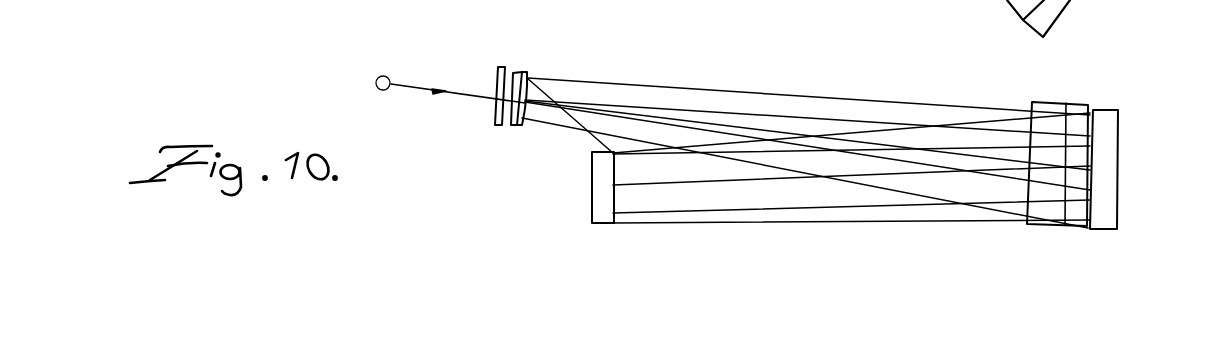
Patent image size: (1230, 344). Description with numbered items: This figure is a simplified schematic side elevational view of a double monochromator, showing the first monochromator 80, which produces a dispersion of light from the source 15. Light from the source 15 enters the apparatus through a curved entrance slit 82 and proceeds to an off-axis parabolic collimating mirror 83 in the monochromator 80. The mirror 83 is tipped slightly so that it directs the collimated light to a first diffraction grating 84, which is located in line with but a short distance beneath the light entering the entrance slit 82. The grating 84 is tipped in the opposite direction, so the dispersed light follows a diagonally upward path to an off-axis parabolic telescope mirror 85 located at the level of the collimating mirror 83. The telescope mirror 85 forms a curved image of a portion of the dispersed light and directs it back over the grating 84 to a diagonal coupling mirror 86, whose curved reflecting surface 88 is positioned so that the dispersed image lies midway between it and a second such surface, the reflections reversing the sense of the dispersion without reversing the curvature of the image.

The source 15 is at (383, 76).
The first monochromator 80 is at (588, 203).
The curved entrance slit 82 is at (492, 80).
The off-axis parabolic collimating mirror 83 is at (1119, 139).
The first diffraction grating 84 is at (592, 157).
The off-axis parabolic telescope mirror 85 is at (1061, 102).
The diagonal coupling mirror 86 is at (517, 72).
The curved reflecting surface 88 is at (527, 82).